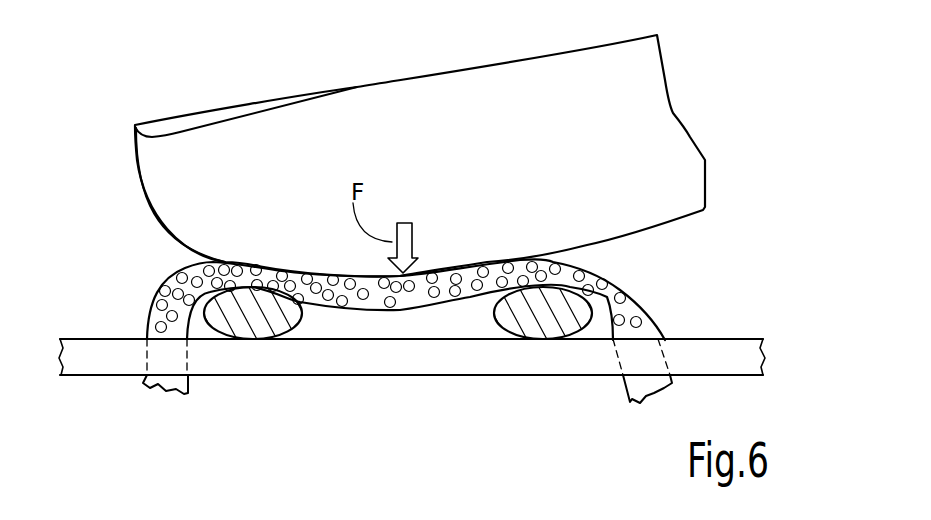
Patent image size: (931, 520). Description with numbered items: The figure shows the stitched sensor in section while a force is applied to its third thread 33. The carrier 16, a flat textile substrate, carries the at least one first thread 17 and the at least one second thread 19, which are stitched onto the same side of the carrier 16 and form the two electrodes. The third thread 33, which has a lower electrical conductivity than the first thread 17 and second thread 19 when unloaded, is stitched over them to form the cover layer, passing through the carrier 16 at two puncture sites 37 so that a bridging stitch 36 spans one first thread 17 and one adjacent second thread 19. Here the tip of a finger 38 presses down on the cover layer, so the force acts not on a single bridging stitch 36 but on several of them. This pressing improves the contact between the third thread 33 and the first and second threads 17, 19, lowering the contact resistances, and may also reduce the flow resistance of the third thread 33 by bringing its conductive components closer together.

The finger 38 is at (645, 118).
The third thread 33 is at (632, 296).
The puncture sites 37 is at (137, 358).
The carrier 16 is at (735, 353).
The first thread 17 is at (252, 312).
The second thread 19 is at (547, 317).
The bridging stitch 36 is at (399, 316).